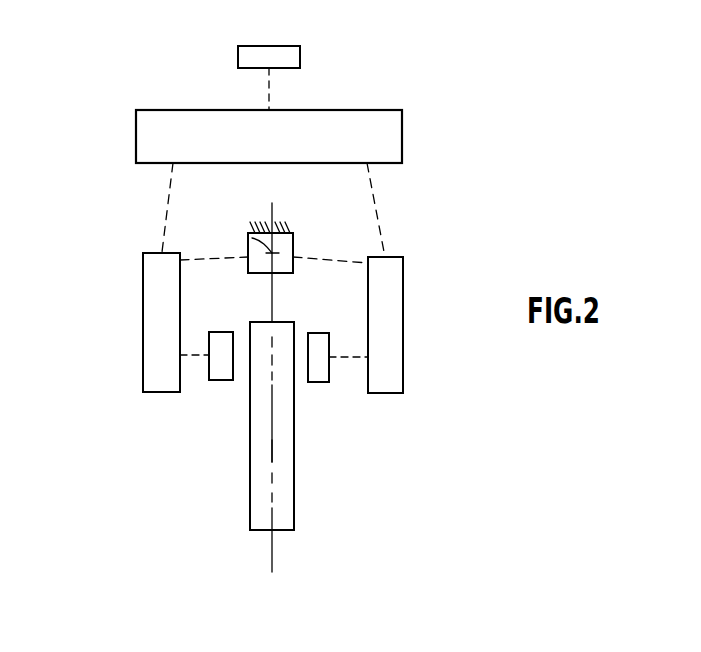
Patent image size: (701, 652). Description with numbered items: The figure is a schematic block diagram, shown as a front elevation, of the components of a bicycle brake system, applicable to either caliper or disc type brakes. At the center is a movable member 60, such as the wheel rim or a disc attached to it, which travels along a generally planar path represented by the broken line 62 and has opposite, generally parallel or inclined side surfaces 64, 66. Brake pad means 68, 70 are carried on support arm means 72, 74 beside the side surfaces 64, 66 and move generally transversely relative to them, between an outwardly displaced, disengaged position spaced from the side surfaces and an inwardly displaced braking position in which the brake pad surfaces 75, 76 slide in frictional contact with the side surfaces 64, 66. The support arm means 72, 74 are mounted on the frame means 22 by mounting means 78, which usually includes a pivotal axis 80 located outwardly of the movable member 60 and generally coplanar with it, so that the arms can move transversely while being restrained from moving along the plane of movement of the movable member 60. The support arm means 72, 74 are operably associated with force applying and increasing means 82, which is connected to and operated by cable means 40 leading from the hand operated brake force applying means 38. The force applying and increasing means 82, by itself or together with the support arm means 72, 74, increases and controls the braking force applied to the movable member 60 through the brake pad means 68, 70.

The hand operated brake force applying means 38 is at (300, 53).
The cable means 40 is at (270, 92).
The force applying and increasing means 82 is at (402, 133).
The frame means 22 is at (278, 220).
The mounting means 78 is at (287, 249).
The pivotal axis 80 is at (243, 228).
The support arm means 72 is at (143, 331).
The support arm means 74 is at (403, 333).
The brake pad surface 75 is at (236, 348).
The brake pad surface 76 is at (303, 345).
The brake pad means 68 is at (221, 381).
The brake pad means 70 is at (318, 383).
The movable member 60 is at (283, 507).
The plane of movement 62 is at (273, 462).
The side surface 64 is at (250, 493).
The side surface 66 is at (295, 490).